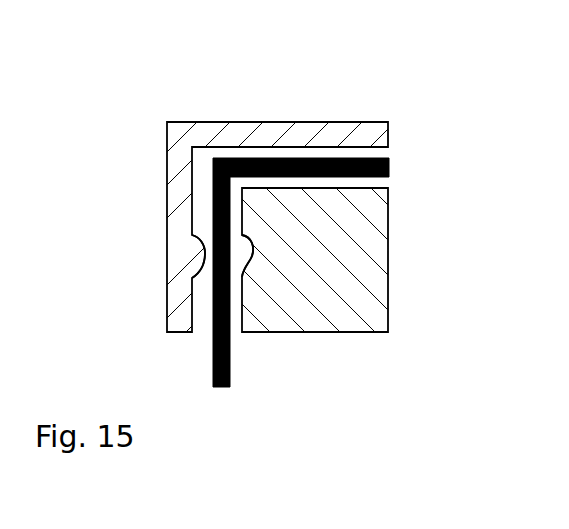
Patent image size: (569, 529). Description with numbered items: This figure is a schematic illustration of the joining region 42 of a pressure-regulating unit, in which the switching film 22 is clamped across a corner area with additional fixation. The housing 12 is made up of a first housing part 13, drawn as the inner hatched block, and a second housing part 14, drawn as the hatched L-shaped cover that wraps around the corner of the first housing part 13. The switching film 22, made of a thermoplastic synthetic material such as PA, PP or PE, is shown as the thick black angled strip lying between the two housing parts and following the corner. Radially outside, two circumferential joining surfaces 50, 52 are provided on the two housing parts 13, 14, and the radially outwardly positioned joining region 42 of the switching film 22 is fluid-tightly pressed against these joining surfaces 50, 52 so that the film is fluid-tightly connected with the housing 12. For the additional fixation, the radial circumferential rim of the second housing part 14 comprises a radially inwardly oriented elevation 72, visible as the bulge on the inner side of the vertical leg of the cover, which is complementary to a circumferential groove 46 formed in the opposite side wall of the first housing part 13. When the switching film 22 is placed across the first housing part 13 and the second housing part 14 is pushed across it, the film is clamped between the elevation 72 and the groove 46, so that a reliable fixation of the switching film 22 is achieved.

The housing 12 is at (324, 220).
The second housing part 14 is at (195, 125).
The first housing part 13 is at (367, 277).
The switching film 22 is at (390, 165).
The joining region 42 is at (199, 164).
The joining surface 52 is at (325, 147).
The elevation 72 is at (203, 257).
The joining surface 50 is at (242, 233).
The groove 46 is at (243, 277).